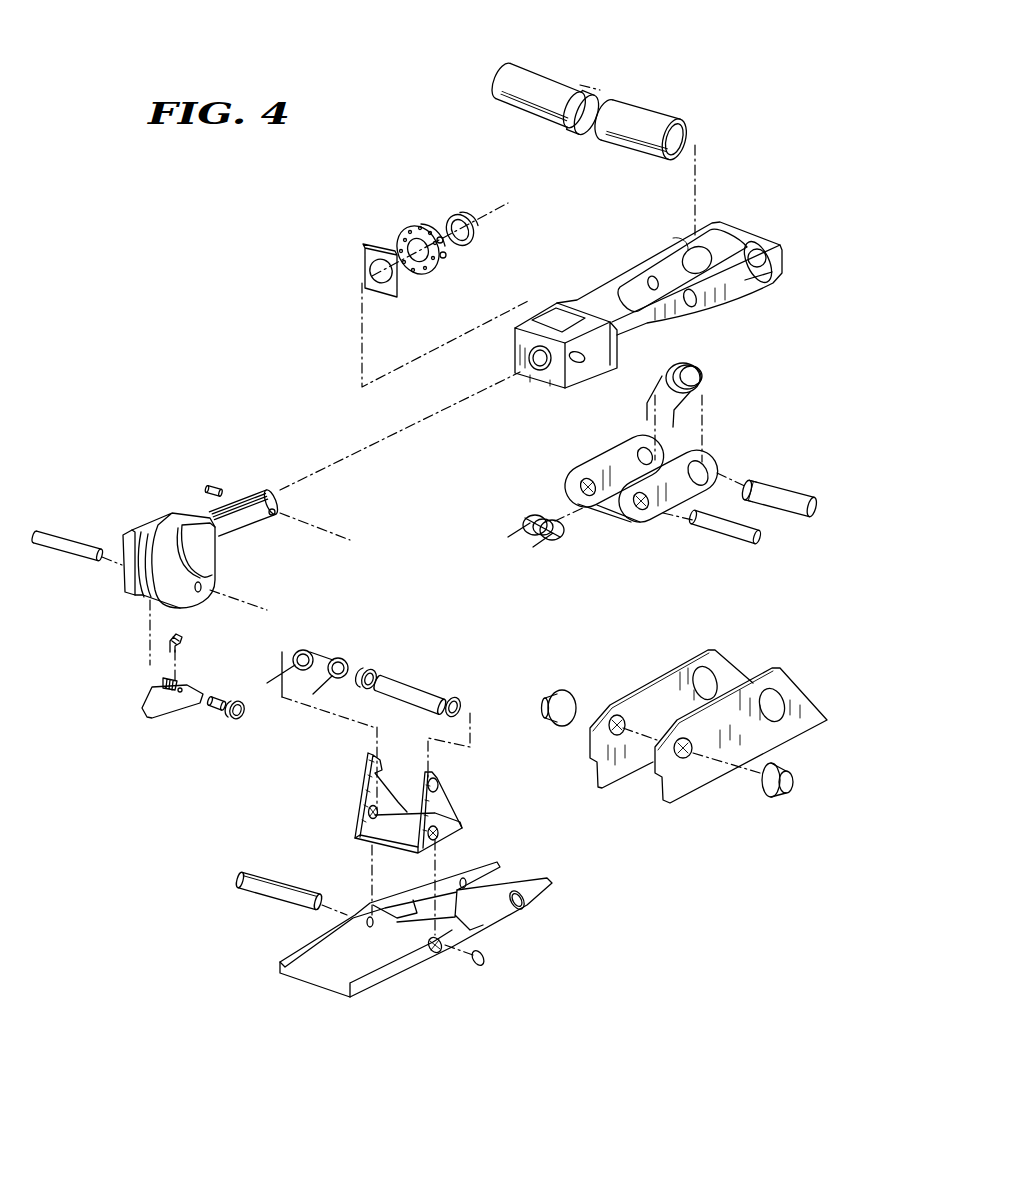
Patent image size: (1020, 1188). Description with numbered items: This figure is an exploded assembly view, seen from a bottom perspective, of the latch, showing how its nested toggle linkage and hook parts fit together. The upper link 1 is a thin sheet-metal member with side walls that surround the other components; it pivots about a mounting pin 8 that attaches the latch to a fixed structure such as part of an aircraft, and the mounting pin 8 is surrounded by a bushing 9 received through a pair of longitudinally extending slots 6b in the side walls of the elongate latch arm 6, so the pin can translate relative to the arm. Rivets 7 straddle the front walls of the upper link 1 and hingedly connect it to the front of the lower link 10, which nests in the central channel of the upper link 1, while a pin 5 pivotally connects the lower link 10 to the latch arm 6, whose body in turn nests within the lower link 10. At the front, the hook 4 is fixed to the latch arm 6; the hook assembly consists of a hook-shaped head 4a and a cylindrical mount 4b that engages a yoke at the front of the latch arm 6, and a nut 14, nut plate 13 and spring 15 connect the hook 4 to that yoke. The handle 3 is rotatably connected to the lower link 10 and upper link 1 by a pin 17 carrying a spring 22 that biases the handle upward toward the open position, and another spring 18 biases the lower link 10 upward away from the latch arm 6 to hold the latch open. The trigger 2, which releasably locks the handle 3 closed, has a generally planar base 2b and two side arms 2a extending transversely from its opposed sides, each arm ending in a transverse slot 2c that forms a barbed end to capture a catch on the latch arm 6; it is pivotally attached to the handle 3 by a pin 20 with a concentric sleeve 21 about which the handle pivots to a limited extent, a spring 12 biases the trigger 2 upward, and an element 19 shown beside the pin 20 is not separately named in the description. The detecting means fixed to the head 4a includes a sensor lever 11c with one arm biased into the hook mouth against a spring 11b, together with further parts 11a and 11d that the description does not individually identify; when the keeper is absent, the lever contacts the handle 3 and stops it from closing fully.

The upper link 1 is at (757, 739).
The trigger 2 is at (420, 761).
The side arms 2a is at (455, 813).
The base 2b is at (376, 842).
The transverse slot 2c is at (434, 786).
The handle 3 is at (488, 913).
The hook 4 is at (182, 543).
The hook-shaped head 4a is at (217, 562).
The cylindrical mount 4b is at (210, 515).
The pin 5 is at (793, 488).
The latch arm 6 is at (712, 224).
The slots 6b is at (746, 300).
The rivets 7 is at (790, 786).
The mounting pin 8 is at (548, 80).
The bushing 9 is at (582, 84).
The lower link 10 is at (622, 446).
The pin 11a is at (55, 535).
The spring 11b is at (150, 653).
The sensor lever 11c is at (147, 716).
The washer 11d is at (232, 722).
The spring 12 is at (300, 680).
The nut plate 13 is at (367, 266).
The nut 14 is at (418, 228).
The spring 15 is at (460, 210).
The pin 17 is at (717, 528).
The spring 18 is at (712, 378).
The bushing 19 is at (370, 671).
The pin 20 is at (412, 688).
The concentric sleeve 21 is at (280, 897).
The spring 22 is at (520, 508).